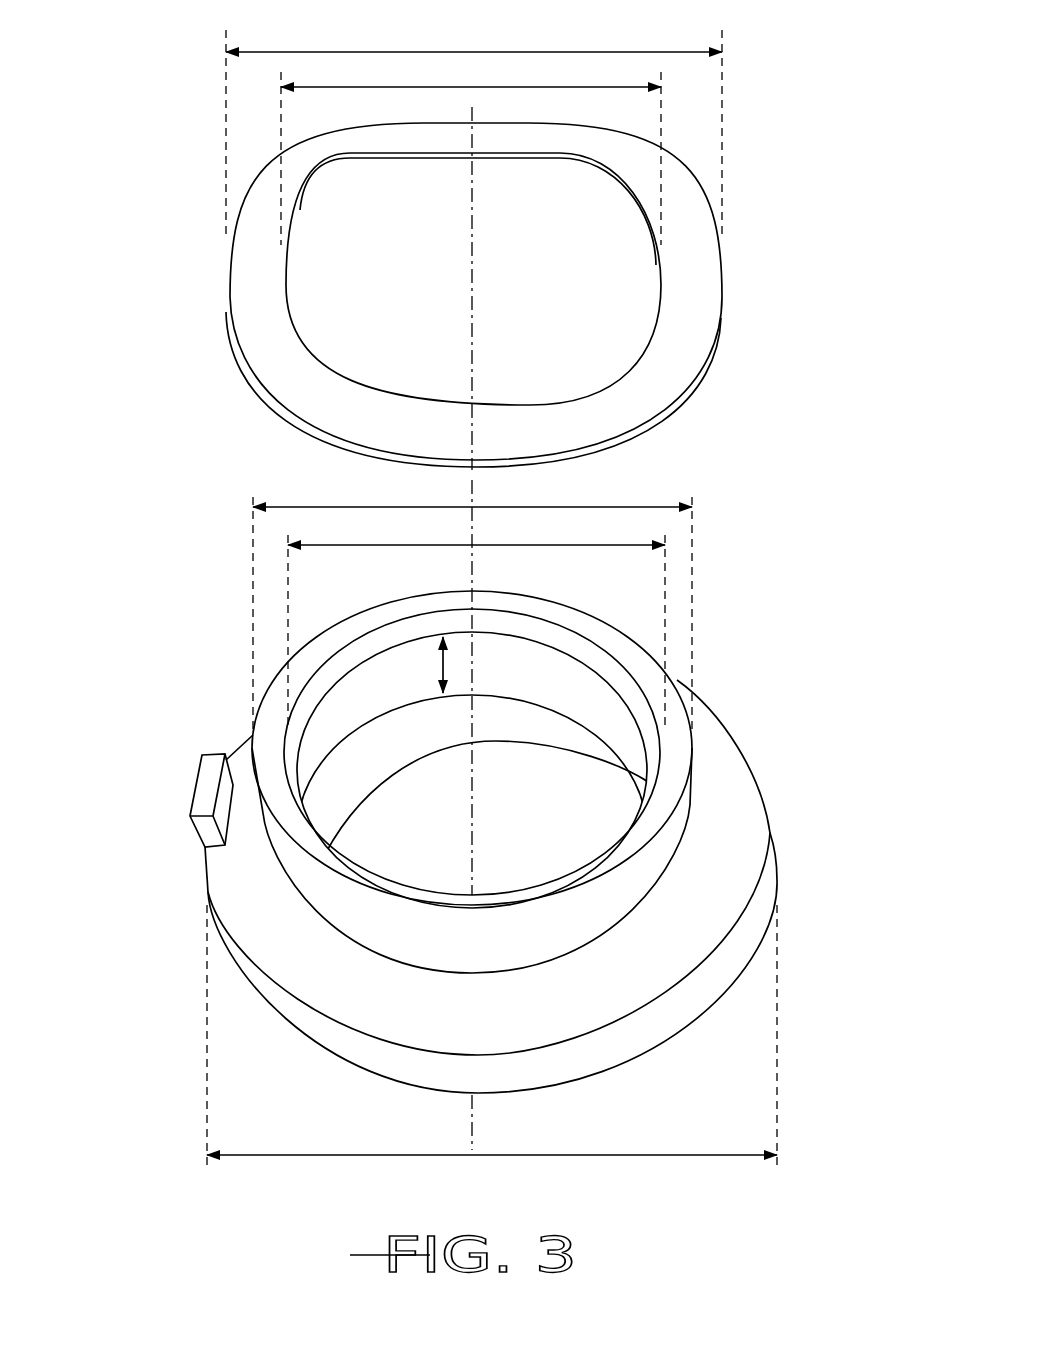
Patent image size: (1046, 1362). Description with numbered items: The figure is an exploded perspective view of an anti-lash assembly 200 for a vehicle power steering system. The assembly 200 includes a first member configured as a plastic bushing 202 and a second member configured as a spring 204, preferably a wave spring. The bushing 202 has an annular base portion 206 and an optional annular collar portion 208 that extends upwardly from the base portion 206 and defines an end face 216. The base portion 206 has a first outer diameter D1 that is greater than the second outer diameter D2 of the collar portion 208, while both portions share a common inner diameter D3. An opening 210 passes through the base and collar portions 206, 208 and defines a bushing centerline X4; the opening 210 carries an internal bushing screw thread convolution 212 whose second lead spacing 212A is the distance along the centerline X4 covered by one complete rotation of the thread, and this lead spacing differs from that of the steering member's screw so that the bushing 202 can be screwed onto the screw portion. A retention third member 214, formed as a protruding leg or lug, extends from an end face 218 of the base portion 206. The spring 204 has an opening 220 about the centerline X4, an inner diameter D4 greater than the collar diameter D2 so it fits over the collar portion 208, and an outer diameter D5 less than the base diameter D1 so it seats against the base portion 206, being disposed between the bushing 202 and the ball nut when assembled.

The anti-lash assembly 200 is at (447, 622).
The bushing 202 is at (425, 849).
The spring 204 is at (362, 143).
The base portion 206 is at (338, 1047).
The collar portion 208 is at (650, 855).
The opening 210 is at (400, 802).
The internal bushing screw thread convolution 212 is at (350, 697).
The second lead spacing 212A is at (443, 663).
The third member 214 is at (166, 788).
The end face 216 is at (643, 665).
The end face 218 is at (233, 890).
The opening 220 is at (504, 295).
The first outer diameter D1 is at (502, 1155).
The second outer diameter D2 is at (388, 507).
The inner diameter D3 is at (517, 548).
The inner diameter D4 is at (502, 90).
The outer diameter D5 is at (458, 50).
The bushing centerline X4 is at (472, 788).